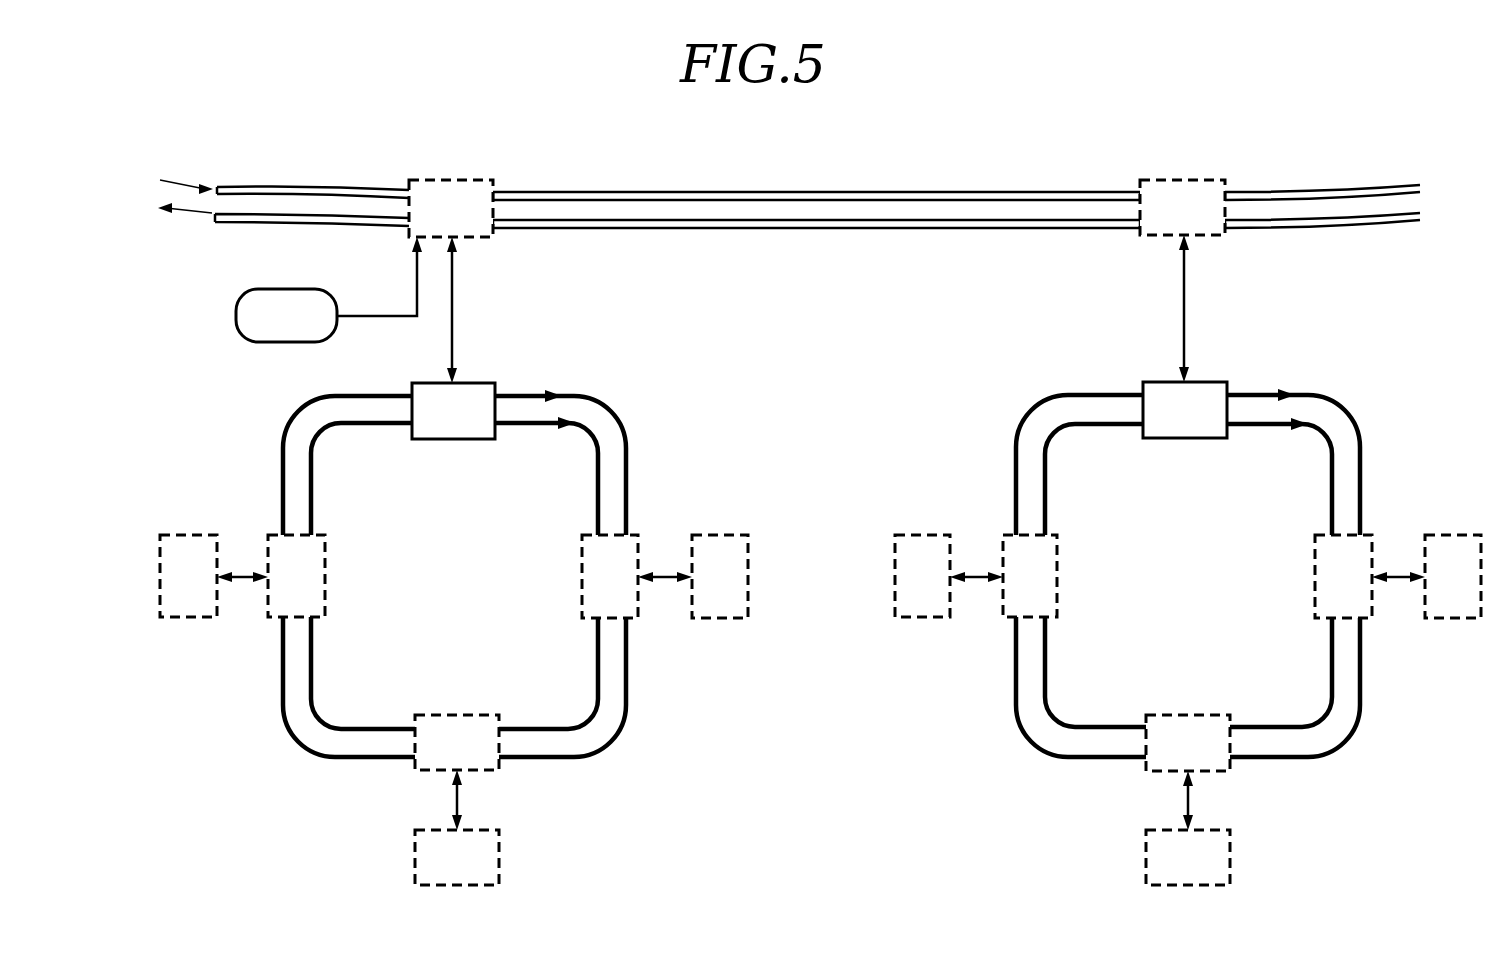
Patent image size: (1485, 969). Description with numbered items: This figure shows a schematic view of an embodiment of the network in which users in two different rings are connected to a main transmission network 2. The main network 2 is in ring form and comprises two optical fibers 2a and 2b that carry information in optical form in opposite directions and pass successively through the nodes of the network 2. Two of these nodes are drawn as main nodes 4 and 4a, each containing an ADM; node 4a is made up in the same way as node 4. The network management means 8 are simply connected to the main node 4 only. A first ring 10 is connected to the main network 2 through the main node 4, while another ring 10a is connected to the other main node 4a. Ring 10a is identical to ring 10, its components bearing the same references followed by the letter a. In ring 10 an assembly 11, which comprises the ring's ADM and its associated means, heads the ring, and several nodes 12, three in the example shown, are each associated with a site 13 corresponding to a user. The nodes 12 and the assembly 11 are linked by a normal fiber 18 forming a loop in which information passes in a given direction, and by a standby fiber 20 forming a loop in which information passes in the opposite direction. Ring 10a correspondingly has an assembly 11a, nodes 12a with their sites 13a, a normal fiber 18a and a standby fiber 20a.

The main transmission network 2 is at (789, 189).
The optical fiber 2a is at (268, 200).
The optical fiber 2b is at (274, 223).
The main node 4 is at (457, 188).
The main node 4a is at (1185, 188).
The network management means 8 is at (290, 330).
The ring 10 is at (503, 552).
The ring 10a is at (1130, 551).
The assembly 11 is at (452, 425).
The assembly 11a is at (1165, 430).
The node 12 is at (330, 578).
The node 12a is at (1043, 578).
The site 13 is at (185, 618).
The site 13a is at (920, 618).
The normal fiber 18 is at (553, 393).
The normal fiber 18a is at (1258, 392).
The standby fiber 20 is at (547, 427).
The standby fiber 20a is at (1300, 430).